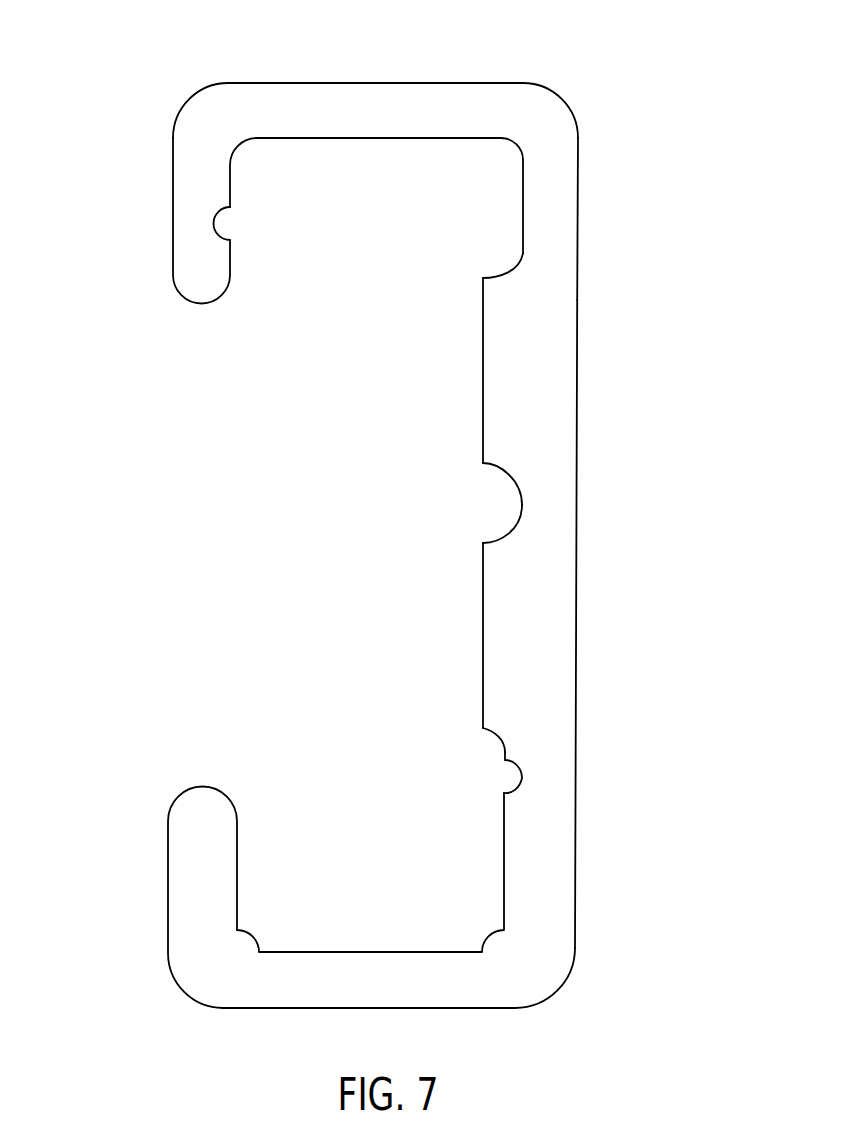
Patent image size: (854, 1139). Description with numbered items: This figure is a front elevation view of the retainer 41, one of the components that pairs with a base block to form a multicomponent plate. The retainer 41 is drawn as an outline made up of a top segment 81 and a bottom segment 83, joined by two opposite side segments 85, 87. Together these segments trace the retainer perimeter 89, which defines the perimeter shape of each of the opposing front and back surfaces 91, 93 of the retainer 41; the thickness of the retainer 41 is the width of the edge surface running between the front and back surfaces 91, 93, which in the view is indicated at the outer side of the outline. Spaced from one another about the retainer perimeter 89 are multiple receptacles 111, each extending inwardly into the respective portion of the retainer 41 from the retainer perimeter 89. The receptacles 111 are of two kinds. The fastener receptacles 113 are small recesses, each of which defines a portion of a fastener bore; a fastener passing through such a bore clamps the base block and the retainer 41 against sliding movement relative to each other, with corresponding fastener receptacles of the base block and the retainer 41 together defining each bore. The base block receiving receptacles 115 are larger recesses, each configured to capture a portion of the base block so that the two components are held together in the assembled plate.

The retainer 41 is at (625, 43).
The top segment 81 is at (393, 72).
The bottom segment 83 is at (283, 1020).
The side segment 85 is at (158, 863).
The side segment 87 is at (595, 853).
The retainer perimeter 89 is at (568, 90).
The front surface 91 is at (508, 317).
The back surface 93 is at (565, 240).
The receptacles 111 is at (505, 240).
The fastener receptacle 113 is at (222, 225).
The base block receiving receptacle 115 is at (507, 255).